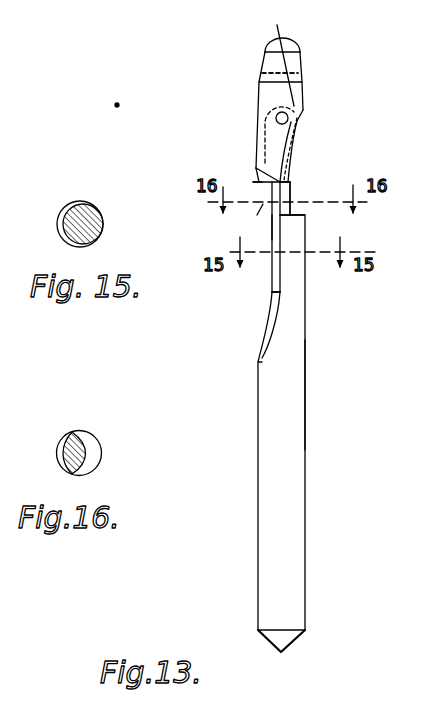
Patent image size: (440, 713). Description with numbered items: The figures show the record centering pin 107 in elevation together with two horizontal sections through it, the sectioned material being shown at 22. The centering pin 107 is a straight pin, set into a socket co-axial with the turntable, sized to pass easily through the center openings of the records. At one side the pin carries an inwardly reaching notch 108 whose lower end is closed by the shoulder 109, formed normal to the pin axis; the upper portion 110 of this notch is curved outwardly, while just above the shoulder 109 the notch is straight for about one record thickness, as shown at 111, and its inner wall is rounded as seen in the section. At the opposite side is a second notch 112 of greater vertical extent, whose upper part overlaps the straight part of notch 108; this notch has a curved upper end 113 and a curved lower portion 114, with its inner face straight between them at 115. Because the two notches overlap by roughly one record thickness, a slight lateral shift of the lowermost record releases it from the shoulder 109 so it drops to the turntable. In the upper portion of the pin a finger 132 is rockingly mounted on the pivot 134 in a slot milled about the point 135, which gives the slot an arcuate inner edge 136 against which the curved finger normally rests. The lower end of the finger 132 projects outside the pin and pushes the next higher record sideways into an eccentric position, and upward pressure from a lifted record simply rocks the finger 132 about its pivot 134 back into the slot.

In FIG. 13, the rod / shaft cross-section 22 is at (307, 372).
In FIG. 15, the rod / shaft cross-section 22 is at (97, 207).
In FIG. 16, the rod / shaft cross-section 22 is at (97, 433).
In FIG. 13, the centering pin 107 is at (307, 423).
In FIG. 13, the notch 108 is at (297, 166).
In FIG. 13, the shoulder 109 is at (300, 211).
In FIG. 13, the upper portion of notch 110 is at (304, 127).
In FIG. 13, the straight portion of notch 111 is at (291, 194).
In FIG. 13, the notch 112 is at (268, 284).
In FIG. 13, the curved upper end 113 is at (257, 182).
In FIG. 13, the lower portion of notch 114 is at (262, 338).
In FIG. 13, the straight inner face portion 115 is at (268, 228).
In FIG. 13, the finger 132 is at (262, 177).
In FIG. 13, the pivot 134 is at (288, 114).
In FIG. 13, the milling cutter center point 135 is at (276, 29).
In FIG. 13, the arcuate inner edge of slot 136 is at (262, 74).